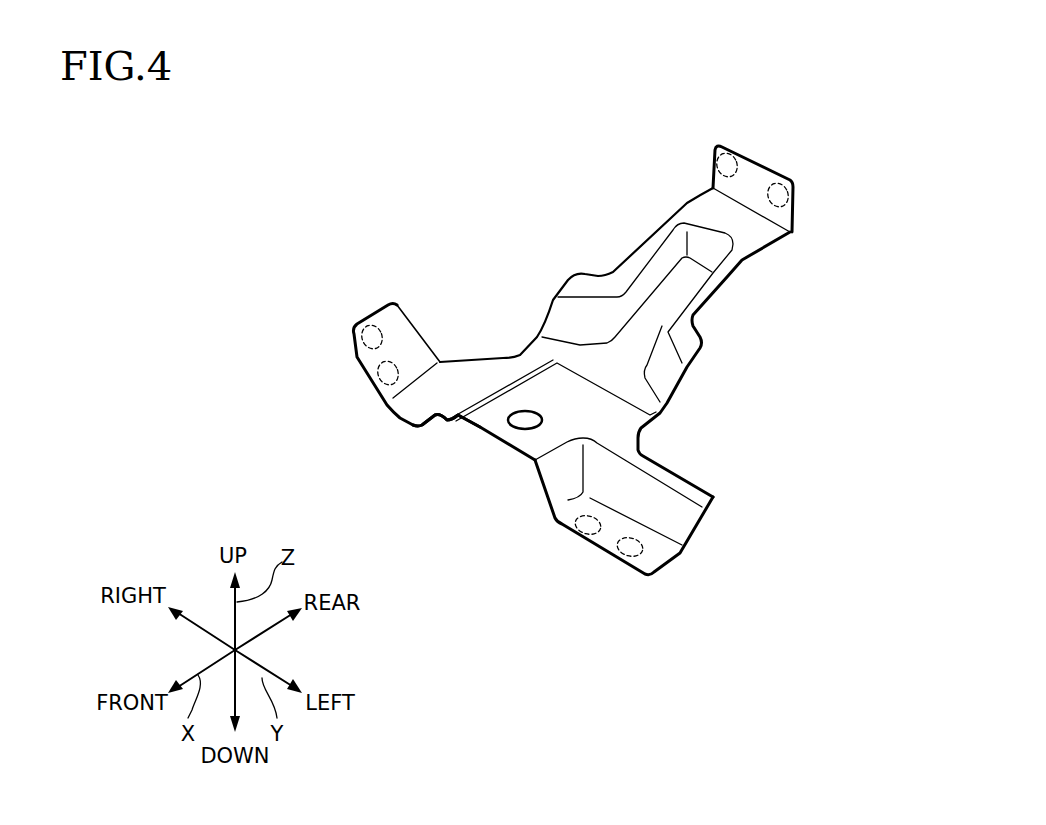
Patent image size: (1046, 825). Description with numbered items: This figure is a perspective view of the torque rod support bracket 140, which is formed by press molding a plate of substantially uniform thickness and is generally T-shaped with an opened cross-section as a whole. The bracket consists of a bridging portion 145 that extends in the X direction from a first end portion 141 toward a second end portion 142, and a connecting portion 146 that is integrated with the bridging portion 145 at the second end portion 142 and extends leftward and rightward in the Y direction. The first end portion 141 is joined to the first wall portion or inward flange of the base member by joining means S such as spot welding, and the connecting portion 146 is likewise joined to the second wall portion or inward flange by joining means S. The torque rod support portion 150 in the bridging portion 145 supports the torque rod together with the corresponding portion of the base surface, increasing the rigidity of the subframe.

The torque rod support bracket 140 is at (575, 359).
The first end portion 141 is at (750, 173).
The second end portion 142 is at (473, 428).
The bridging portion 145 is at (708, 288).
The connecting portion 146 is at (400, 325).
The torque rod support portion 150 is at (527, 422).
The joining means S is at (778, 186).